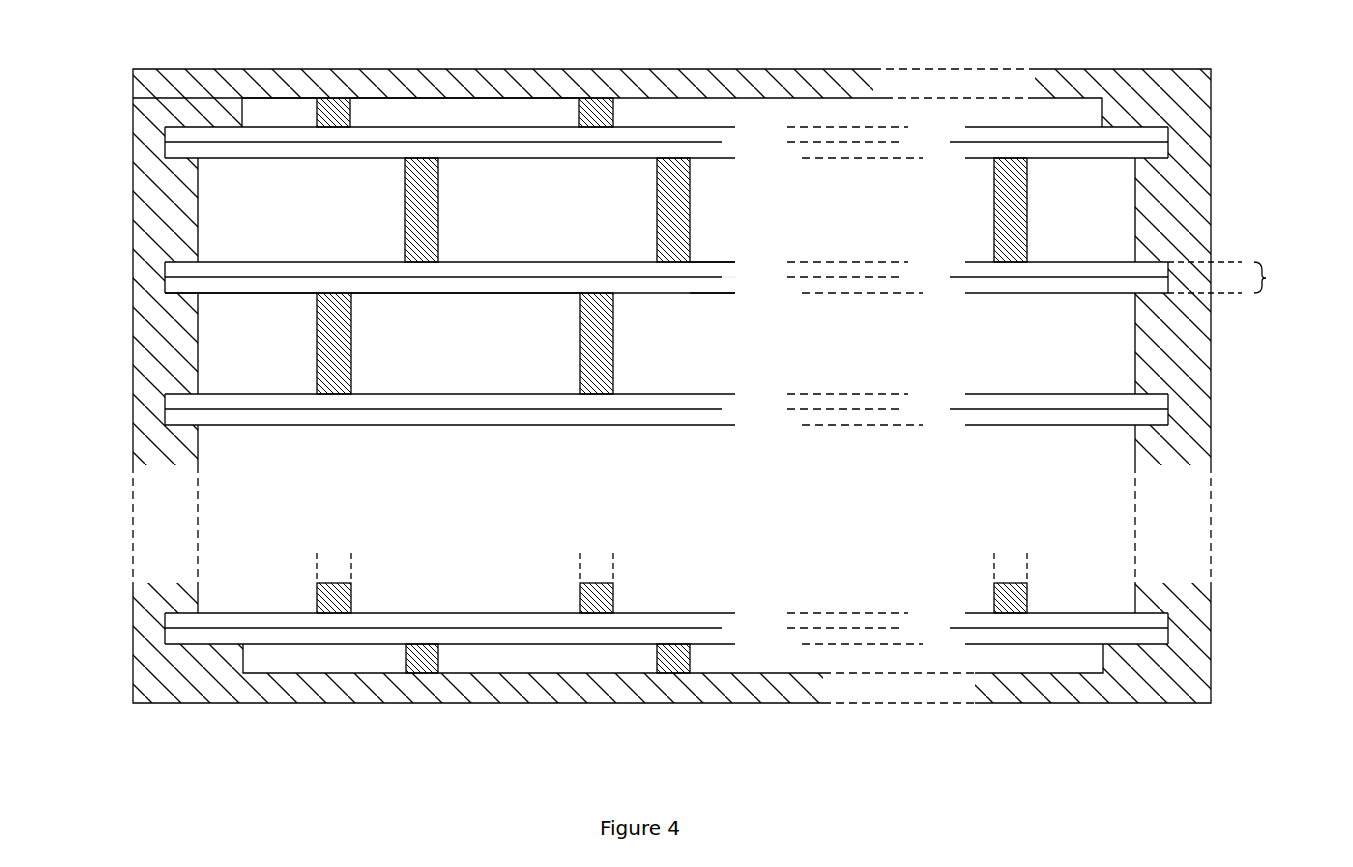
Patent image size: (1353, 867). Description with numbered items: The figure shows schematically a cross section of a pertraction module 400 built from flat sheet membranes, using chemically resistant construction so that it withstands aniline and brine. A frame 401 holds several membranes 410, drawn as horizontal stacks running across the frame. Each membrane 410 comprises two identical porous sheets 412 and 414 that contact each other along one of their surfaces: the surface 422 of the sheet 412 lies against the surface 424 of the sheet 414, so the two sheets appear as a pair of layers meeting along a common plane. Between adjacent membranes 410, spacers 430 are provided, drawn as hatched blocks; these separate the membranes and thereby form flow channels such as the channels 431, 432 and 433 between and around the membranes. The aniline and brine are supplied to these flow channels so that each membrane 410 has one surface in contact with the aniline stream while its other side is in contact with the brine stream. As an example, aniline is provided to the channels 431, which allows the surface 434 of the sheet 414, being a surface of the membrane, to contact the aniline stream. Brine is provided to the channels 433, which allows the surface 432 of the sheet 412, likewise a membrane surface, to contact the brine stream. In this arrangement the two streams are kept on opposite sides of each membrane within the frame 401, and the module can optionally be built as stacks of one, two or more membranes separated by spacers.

The module 400 is at (1083, 752).
The frame 401 is at (1198, 100).
The membrane 410 is at (1277, 279).
The porous sheet 412 is at (1125, 272).
The porous sheet 414 is at (1125, 287).
The surface 422 is at (714, 276).
The surface 424 is at (678, 278).
The spacer 430 is at (590, 120).
The channel 431 is at (384, 348).
The surface 432 is at (525, 112).
The channel 433 is at (296, 200).
The surface 434 is at (514, 294).